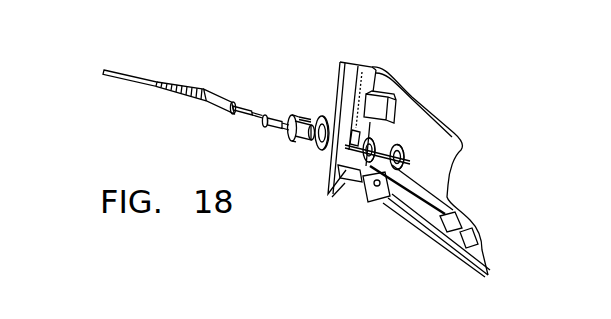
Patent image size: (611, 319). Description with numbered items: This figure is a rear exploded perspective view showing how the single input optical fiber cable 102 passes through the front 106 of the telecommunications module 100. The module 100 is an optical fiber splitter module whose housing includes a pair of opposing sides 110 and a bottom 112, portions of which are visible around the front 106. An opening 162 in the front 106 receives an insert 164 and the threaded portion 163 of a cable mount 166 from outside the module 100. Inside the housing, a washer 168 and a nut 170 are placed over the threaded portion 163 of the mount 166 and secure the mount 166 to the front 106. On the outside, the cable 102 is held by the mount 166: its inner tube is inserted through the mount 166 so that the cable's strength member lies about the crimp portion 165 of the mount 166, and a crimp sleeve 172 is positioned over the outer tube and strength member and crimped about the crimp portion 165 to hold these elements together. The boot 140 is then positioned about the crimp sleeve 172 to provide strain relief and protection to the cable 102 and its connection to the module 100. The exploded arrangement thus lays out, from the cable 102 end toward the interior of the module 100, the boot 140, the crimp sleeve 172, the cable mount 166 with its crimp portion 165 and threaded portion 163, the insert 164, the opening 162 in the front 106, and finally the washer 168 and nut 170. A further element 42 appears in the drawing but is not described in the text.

The cable actuator assembly 100 is at (492, 125).
The cable 102 is at (110, 76).
The cable conduit end fitting 140 is at (216, 100).
The cable rod 172 is at (249, 116).
The nut 165 is at (287, 120).
The hub 166 is at (290, 138).
The threaded portion 163 is at (303, 122).
The washer 164 is at (319, 140).
The mounting plate 106 is at (345, 62).
The hood 112 is at (430, 160).
The rod 162 is at (342, 172).
The washer 168 is at (364, 163).
The washer 170 is at (401, 146).
The bracket 110 is at (431, 222).
The fastener 42 is at (473, 228).